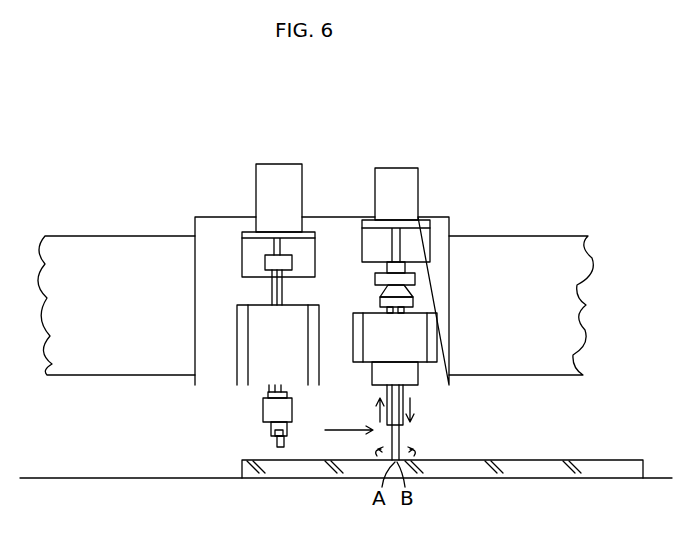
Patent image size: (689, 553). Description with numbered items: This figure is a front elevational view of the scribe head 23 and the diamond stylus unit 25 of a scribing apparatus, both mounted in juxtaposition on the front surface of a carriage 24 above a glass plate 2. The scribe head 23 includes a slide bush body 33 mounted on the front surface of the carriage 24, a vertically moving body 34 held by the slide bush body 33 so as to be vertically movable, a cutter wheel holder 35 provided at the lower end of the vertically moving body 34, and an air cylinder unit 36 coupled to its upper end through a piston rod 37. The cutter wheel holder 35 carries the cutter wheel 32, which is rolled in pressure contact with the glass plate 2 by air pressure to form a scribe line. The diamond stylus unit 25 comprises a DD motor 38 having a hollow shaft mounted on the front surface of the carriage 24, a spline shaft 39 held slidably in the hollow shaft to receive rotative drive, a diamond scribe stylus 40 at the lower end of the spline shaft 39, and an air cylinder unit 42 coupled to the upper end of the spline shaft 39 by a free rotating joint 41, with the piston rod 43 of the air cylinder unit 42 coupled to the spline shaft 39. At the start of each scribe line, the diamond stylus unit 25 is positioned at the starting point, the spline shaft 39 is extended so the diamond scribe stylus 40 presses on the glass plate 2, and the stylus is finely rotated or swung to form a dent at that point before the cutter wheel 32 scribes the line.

The glass plate 2 is at (600, 460).
The scribe head 23 is at (243, 322).
The carriage 24 is at (224, 240).
The diamond stylus unit 25 is at (416, 316).
The cutter wheel 32 is at (277, 438).
The slide bush body 33 is at (264, 348).
The vertically moving body 34 is at (268, 392).
The cutter wheel holder 35 is at (275, 410).
The air cylinder unit 36 is at (278, 185).
The piston rod 37 is at (282, 248).
The DD motor 38 is at (413, 330).
The spline shaft 39 is at (395, 390).
The diamond scribe stylus 40 is at (398, 437).
The free rotating joint 41 is at (412, 279).
The air cylinder unit 42 is at (397, 182).
The piston rod 43 is at (395, 248).